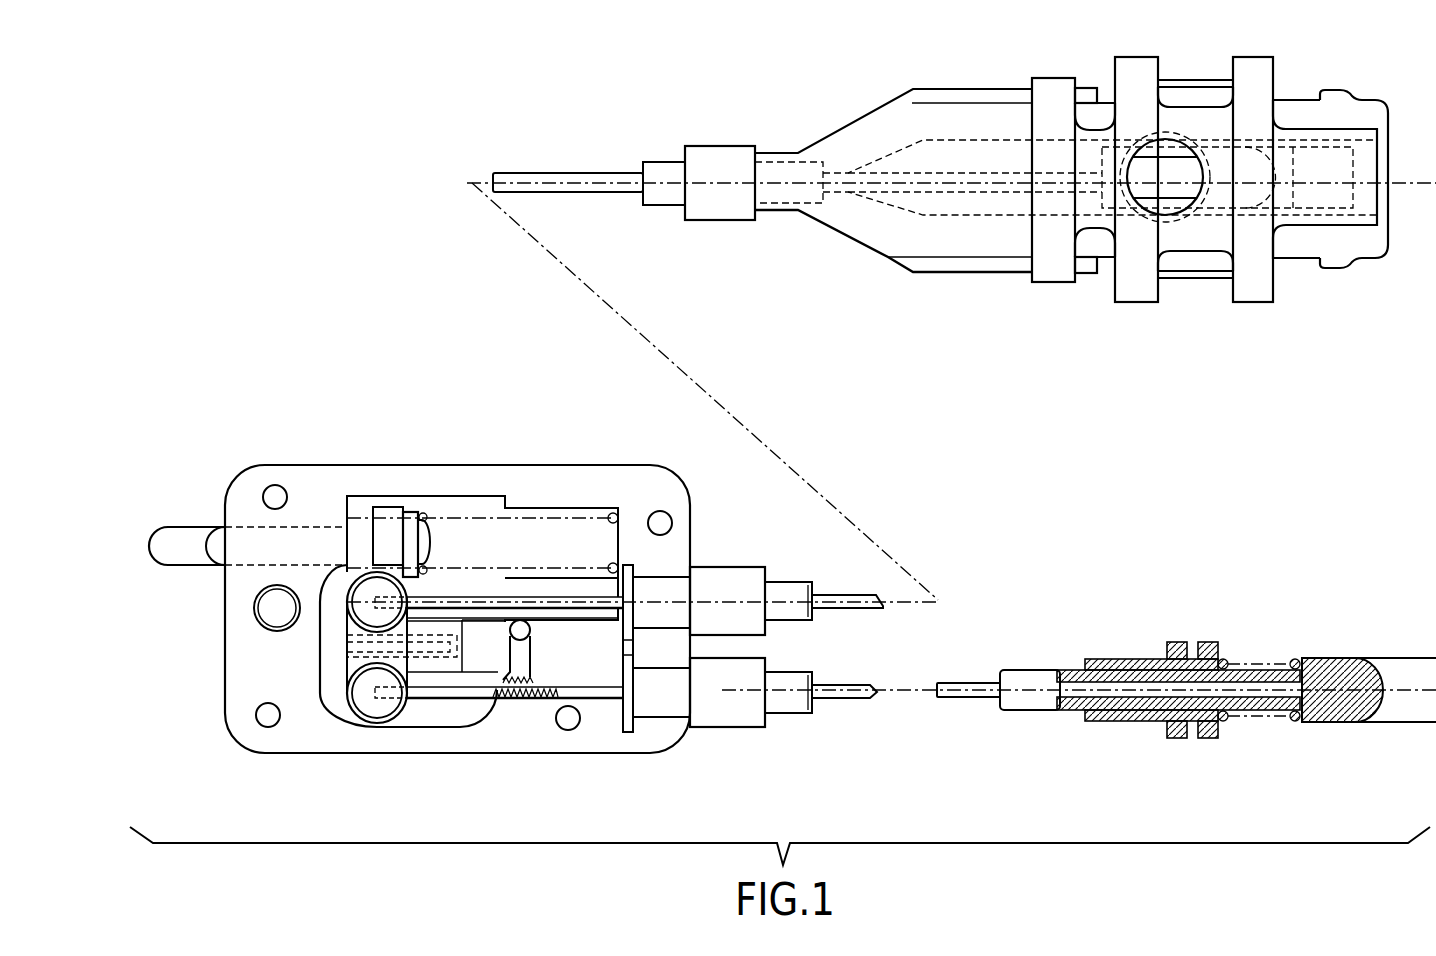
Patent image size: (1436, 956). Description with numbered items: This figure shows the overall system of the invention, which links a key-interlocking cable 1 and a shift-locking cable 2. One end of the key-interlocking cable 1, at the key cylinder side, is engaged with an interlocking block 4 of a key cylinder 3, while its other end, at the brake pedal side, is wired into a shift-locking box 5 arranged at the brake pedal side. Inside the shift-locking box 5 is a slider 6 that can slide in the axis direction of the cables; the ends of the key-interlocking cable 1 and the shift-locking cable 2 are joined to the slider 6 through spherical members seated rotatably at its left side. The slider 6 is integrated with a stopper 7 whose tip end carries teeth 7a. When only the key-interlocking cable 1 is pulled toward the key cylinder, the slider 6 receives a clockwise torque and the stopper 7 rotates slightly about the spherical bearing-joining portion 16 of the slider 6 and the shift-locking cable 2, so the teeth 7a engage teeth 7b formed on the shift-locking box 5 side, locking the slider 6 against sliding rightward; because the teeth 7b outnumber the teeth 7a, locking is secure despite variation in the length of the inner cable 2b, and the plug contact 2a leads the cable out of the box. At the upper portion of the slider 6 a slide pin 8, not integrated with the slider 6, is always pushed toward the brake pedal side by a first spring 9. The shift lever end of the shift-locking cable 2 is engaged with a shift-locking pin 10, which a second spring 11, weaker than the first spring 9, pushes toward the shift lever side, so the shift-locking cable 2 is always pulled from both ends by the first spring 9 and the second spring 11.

The key-interlocking cable 1 is at (472, 183).
The shift-locking cable 2 is at (912, 690).
The upper plug contact 2a is at (810, 715).
The inner cable 2b is at (845, 700).
The key cylinder 3 is at (950, 275).
The interlocking block 4 is at (1255, 287).
The shift-locking box 5 is at (467, 753).
The slider 6 is at (347, 648).
The stopper 7 is at (557, 710).
The teeth 7a is at (536, 697).
The teeth 7b is at (515, 693).
The slide pin 8 is at (192, 533).
The first spring 9 is at (425, 517).
The shift-locking pin 10 is at (1348, 665).
The second spring 11 is at (1225, 718).
The spherical bearing-joining portion 16 is at (372, 703).